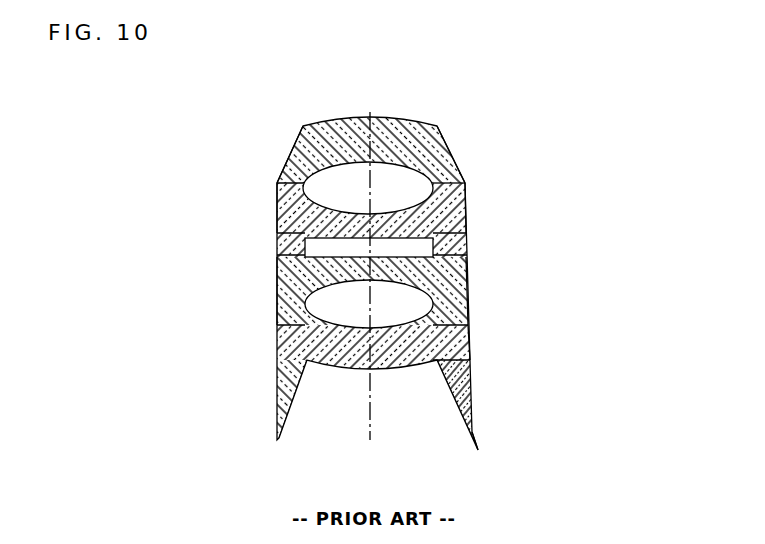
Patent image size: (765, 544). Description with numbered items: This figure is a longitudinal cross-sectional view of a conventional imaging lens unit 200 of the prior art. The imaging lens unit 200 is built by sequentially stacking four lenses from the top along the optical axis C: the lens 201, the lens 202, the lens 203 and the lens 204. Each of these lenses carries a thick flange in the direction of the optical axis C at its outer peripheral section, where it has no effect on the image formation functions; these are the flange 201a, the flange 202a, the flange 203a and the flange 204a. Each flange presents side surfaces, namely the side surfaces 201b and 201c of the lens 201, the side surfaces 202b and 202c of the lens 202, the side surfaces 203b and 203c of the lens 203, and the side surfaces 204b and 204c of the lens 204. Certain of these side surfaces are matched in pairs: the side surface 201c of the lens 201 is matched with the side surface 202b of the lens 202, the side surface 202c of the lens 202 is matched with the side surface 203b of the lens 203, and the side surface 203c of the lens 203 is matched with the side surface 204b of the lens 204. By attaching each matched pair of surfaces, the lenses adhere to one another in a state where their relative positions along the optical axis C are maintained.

The imaging lens unit 200 is at (431, 71).
The lens 201 is at (331, 121).
The flange 201a is at (292, 159).
The side surface 201b is at (432, 128).
The side surface 201c is at (456, 165).
The lens 202 is at (342, 213).
The flange 202a is at (287, 226).
The side surface 202b is at (467, 192).
The side surface 202c is at (453, 257).
The lens 203 is at (384, 272).
The flange 203a is at (279, 323).
The side surface 203b is at (474, 290).
The side surface 203c is at (470, 340).
The lens 204 is at (354, 340).
The flange 204a is at (281, 400).
The side surface 204b is at (476, 378).
The side surface 204c is at (490, 456).
The optical axis C is at (372, 113).